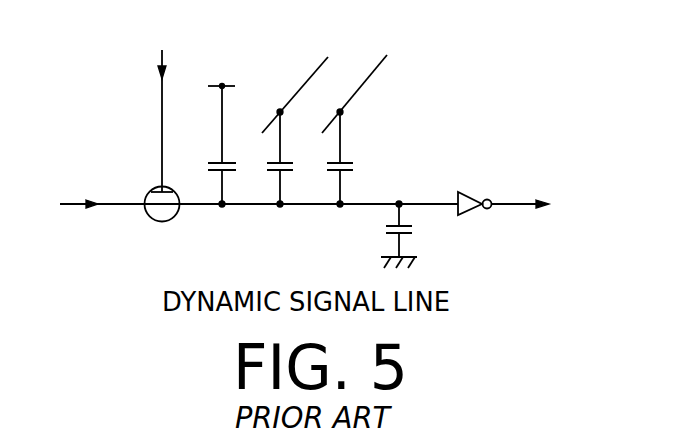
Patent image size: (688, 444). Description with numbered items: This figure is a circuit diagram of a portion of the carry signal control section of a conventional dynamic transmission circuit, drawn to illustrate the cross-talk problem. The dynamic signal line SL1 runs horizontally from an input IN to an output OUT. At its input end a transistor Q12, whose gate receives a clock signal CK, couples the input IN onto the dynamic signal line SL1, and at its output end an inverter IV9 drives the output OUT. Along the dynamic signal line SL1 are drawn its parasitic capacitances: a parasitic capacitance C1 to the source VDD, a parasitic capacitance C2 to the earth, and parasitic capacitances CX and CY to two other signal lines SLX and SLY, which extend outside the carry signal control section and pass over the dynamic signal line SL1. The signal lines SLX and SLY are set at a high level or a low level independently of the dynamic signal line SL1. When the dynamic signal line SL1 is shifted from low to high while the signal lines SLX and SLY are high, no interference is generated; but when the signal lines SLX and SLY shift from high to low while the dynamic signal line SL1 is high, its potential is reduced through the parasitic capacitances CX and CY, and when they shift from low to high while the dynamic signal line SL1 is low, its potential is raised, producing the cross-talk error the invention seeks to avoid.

The dynamic signal line SL1 is at (238, 206).
The input IN is at (65, 203).
The output OUT is at (551, 204).
The transistor Q12 is at (160, 223).
The clock signal CK is at (165, 106).
The source VDD is at (228, 107).
The parasitic capacitance C1 is at (208, 176).
The signal line SLX is at (304, 80).
The parasitic capacitance CX is at (296, 159).
The signal line SLY is at (354, 96).
The parasitic capacitance CY is at (358, 159).
The parasitic capacitance C2 is at (415, 234).
The inverter IV9 is at (474, 189).